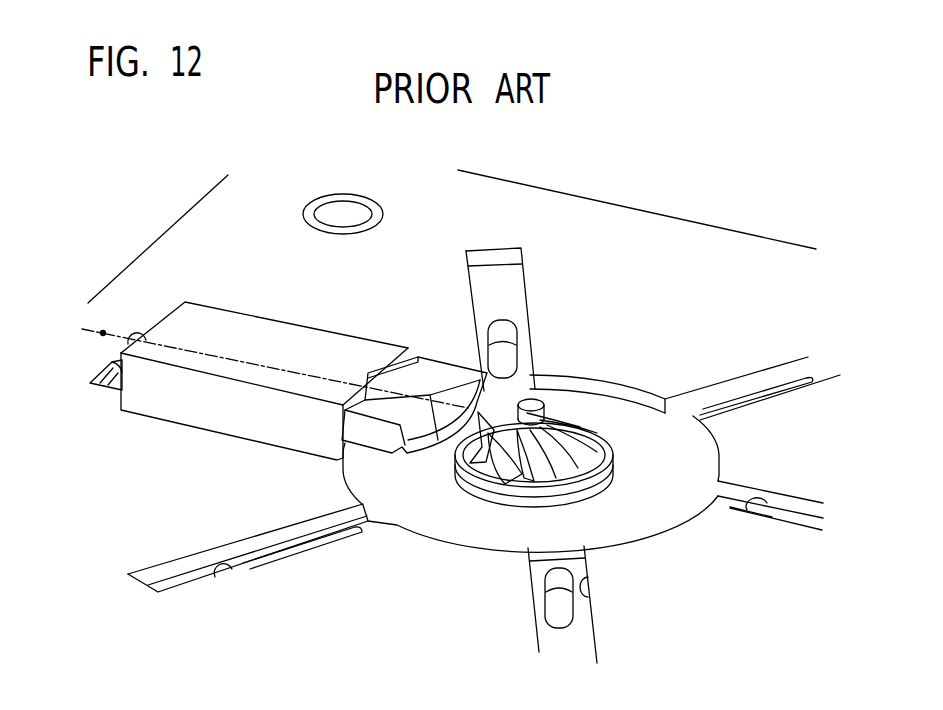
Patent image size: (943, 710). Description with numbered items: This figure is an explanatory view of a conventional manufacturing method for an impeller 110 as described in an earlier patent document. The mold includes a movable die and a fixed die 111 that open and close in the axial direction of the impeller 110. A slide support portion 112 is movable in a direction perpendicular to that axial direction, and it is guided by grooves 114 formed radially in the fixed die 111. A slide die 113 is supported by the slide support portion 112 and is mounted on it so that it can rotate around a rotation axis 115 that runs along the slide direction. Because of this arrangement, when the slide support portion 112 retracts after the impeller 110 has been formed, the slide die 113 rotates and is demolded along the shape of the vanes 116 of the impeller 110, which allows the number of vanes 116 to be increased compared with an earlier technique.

The impeller 110 is at (490, 473).
The fixed die 111 is at (643, 240).
The slide support portion 112 is at (208, 412).
The slide die 113 is at (452, 373).
The grooves 114 is at (95, 370).
The rotation axis 115 is at (103, 333).
The vanes 116 is at (495, 405).